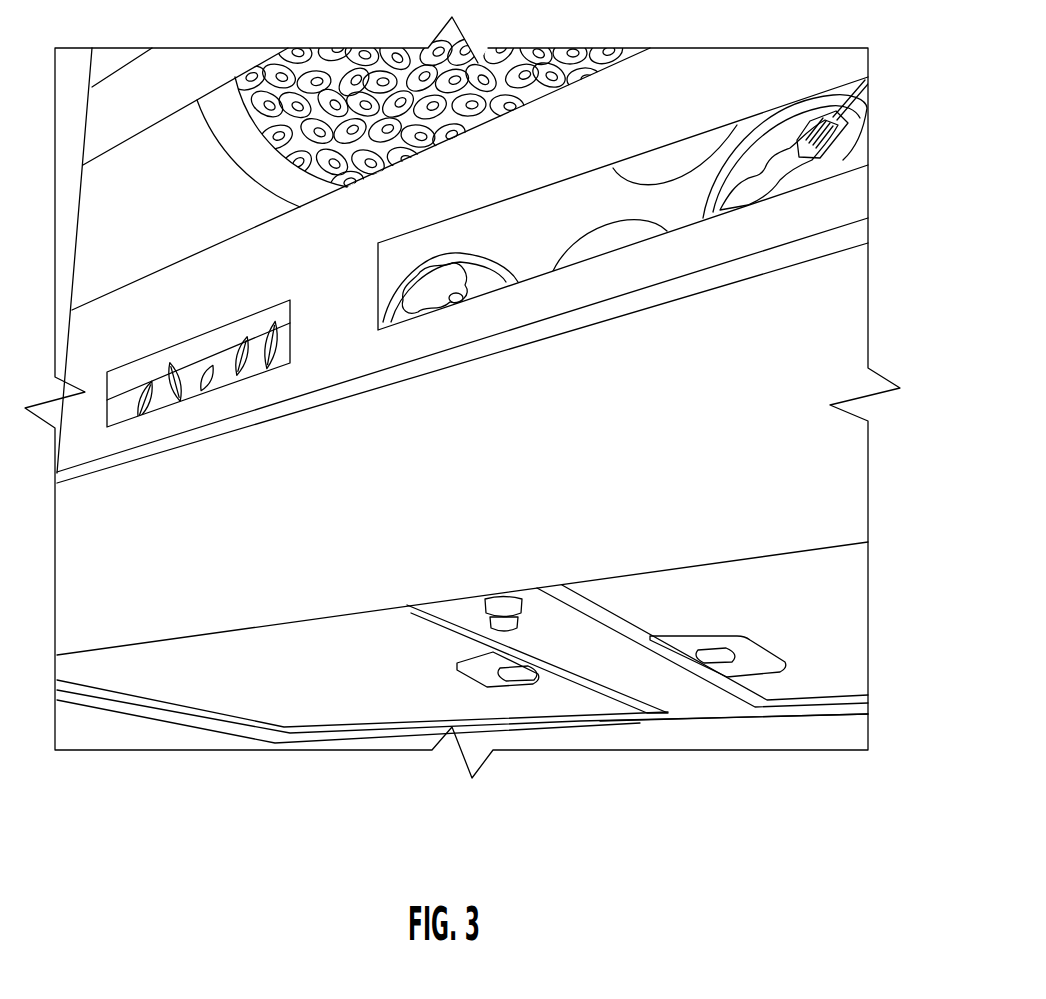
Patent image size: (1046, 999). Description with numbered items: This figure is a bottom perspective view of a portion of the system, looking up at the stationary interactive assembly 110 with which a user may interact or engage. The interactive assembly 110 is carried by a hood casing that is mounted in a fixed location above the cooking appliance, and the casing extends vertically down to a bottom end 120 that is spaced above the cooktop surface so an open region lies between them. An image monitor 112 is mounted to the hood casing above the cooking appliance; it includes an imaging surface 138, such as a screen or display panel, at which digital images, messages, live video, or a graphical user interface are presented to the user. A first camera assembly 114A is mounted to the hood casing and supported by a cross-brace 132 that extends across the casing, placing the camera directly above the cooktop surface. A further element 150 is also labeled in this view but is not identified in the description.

The interactive assembly 110 is at (878, 231).
The image monitor 112 is at (70, 554).
The first camera assembly 114A is at (483, 611).
The bottom end 120 is at (700, 730).
The cross-brace 132 is at (608, 668).
The imaging surface 138 is at (84, 344).
The ledge 150 is at (284, 696).